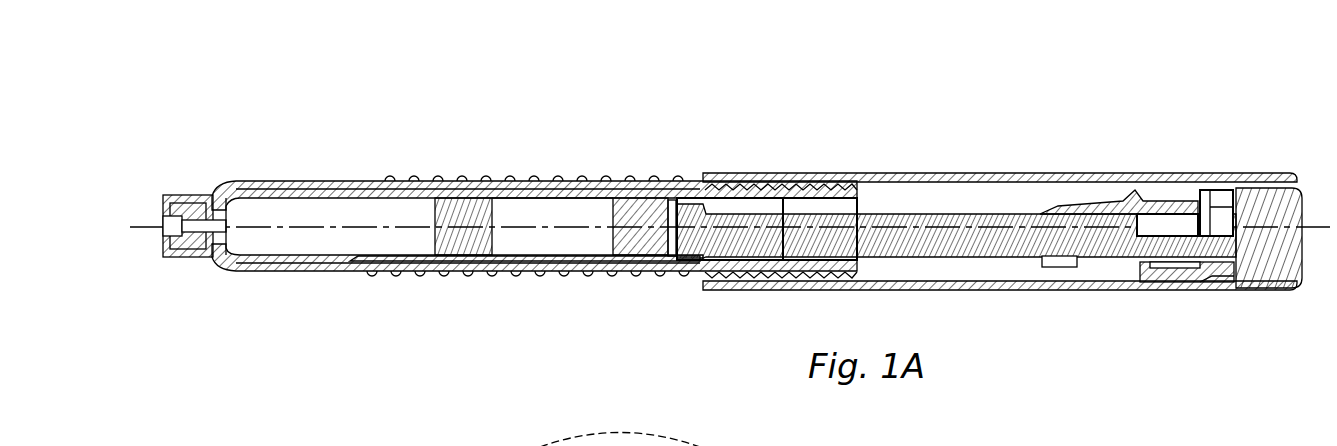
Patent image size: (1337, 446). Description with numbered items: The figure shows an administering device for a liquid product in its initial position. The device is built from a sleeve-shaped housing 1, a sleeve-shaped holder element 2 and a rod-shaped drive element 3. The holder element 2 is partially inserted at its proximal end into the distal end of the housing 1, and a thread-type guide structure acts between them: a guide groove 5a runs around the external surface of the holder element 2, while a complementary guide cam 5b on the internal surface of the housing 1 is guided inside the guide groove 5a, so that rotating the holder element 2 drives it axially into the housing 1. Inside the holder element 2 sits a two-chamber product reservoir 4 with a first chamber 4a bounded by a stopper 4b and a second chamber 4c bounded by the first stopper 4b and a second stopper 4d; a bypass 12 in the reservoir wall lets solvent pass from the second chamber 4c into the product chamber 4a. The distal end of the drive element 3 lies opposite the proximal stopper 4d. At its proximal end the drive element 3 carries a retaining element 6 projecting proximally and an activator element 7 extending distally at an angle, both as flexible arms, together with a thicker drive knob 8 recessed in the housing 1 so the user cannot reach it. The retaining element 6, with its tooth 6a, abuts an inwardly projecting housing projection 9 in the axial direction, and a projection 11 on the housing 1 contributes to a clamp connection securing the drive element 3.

The housing 1 is at (958, 180).
The holder element 2 is at (337, 185).
The drive element 3 is at (873, 222).
The product reservoir 4 is at (262, 185).
The first chamber 4a is at (261, 250).
The stopper 4b is at (458, 243).
The second chamber 4c is at (563, 242).
The second stopper 4d is at (652, 245).
The guide groove 5a is at (475, 182).
The guide cam 5b is at (764, 186).
The retaining element 6 is at (1083, 210).
The latch tooth 6a is at (1138, 196).
The activator element 7 is at (1163, 290).
The drive knob 8 is at (1270, 195).
The housing projection 9 is at (1206, 190).
The projection 11 is at (1205, 283).
The bypass 12 is at (371, 262).